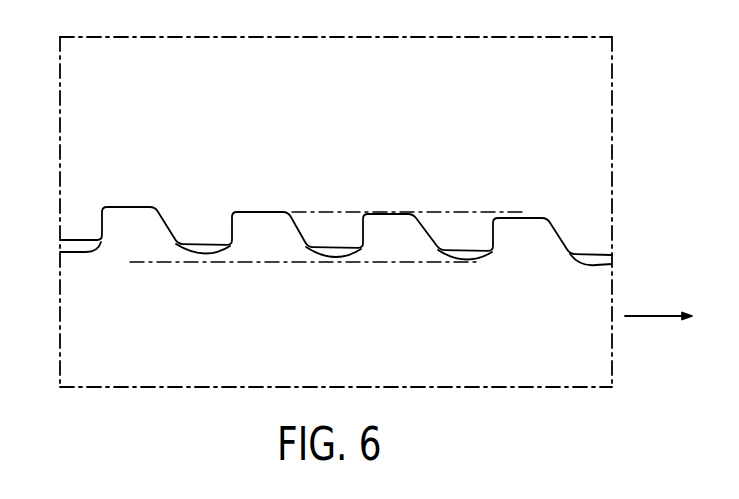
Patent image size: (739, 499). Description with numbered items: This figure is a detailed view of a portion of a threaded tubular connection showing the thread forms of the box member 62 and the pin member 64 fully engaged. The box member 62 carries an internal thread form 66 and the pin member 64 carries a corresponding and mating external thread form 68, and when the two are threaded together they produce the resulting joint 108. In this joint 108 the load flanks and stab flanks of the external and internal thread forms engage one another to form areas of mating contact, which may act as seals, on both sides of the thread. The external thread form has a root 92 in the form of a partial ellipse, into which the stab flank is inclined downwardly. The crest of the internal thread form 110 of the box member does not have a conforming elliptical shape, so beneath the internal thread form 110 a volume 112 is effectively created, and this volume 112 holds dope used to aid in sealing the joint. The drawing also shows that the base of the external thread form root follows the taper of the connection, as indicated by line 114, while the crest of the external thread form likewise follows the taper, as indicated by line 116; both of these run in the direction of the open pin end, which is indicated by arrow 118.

The tubular box member 62 is at (580, 43).
The tubular pin member 64 is at (597, 363).
The internal thread form 66 is at (121, 198).
The external thread form 68 is at (120, 241).
The root 92 is at (482, 258).
The joint 108 is at (383, 200).
The internal thread form 110 is at (465, 246).
The volume 112 is at (470, 259).
The line 114 is at (300, 263).
The line 116 is at (392, 212).
The arrow 118 is at (652, 316).